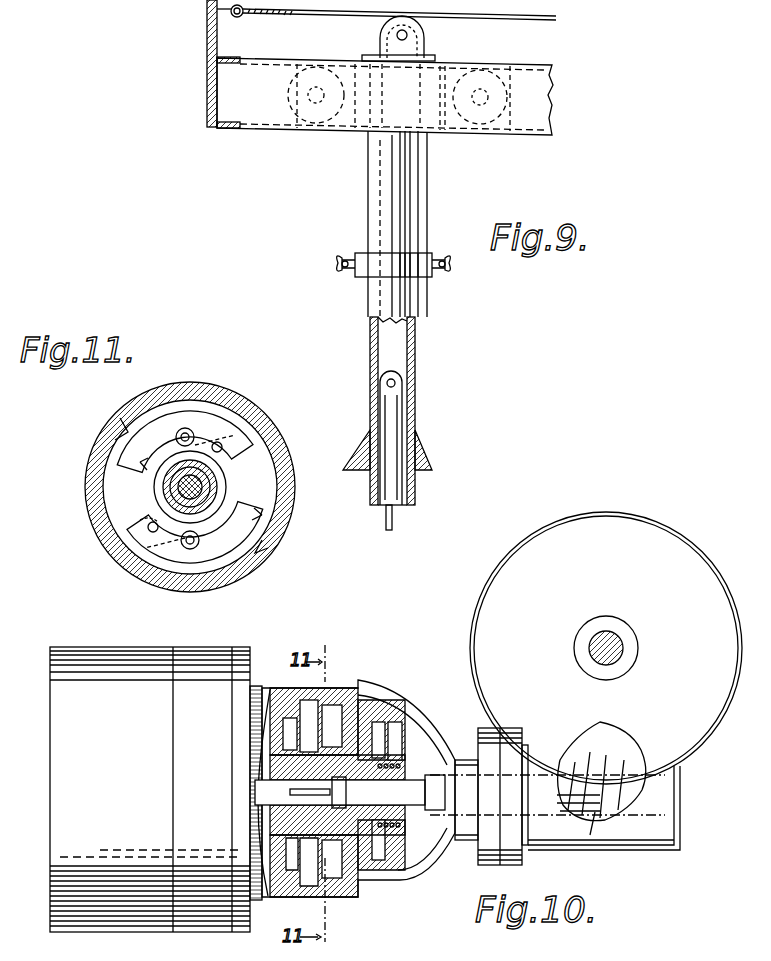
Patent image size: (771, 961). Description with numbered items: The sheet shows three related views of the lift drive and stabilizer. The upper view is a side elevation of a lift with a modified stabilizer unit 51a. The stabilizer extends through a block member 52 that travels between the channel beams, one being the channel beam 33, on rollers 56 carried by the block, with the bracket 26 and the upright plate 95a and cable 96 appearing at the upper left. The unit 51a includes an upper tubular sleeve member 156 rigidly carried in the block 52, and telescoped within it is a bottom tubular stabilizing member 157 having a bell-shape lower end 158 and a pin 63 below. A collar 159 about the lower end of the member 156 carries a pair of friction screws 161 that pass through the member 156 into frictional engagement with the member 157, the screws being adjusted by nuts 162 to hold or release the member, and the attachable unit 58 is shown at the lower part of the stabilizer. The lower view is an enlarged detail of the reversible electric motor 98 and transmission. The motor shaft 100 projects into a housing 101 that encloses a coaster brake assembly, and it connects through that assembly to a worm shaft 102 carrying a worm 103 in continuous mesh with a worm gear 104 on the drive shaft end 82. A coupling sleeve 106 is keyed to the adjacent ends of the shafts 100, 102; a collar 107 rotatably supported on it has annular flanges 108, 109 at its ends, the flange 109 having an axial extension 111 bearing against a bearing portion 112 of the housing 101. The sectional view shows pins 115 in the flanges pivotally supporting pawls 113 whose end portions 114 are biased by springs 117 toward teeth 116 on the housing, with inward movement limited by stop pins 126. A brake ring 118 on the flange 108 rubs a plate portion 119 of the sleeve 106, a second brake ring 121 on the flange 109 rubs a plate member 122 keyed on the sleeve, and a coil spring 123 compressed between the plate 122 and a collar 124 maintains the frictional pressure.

In FIG. 9, the channel bracket 26 is at (210, 103).
In FIG. 9, the channel beam 33 is at (515, 63).
In FIG. 9, the stabilizer unit 51a is at (430, 198).
In FIG. 9, the block member 52 is at (455, 72).
In FIG. 9, the roller 56 is at (320, 62).
In FIG. 9, the attachable unit 58 is at (405, 400).
In FIG. 9, the pin 63 is at (395, 517).
In FIG. 10, the drive shaft end 82 is at (630, 650).
In FIG. 9, the upright plate 95a is at (207, 30).
In FIG. 9, the cable 96 is at (552, 20).
In FIG. 10, the electric motor 98 is at (208, 655).
In FIG. 11, the motor shaft 100 is at (204, 483).
In FIG. 10, the motor shaft 100 is at (300, 798).
In FIG. 11, the housing 101 is at (265, 432).
In FIG. 10, the housing 101 is at (385, 752).
In FIG. 10, the worm shaft 102 is at (350, 792).
In FIG. 10, the worm 103 is at (590, 838).
In FIG. 10, the worm gear 104 is at (625, 745).
In FIG. 11, the coupling sleeve 106 is at (211, 487).
In FIG. 10, the coupling sleeve 106 is at (547, 784).
In FIG. 11, the collar 107 is at (215, 488).
In FIG. 10, the collar 107 is at (300, 815).
In FIG. 10, the annular flange 108 is at (267, 793).
In FIG. 11, the annular flange 109 is at (235, 458).
In FIG. 10, the annular flange 109 is at (345, 720).
In FIG. 10, the annular axial extension 111 is at (375, 735).
In FIG. 10, the bearing portion 112 is at (372, 880).
In FIG. 11, the pawl 113 is at (120, 432).
In FIG. 10, the pawl 113 is at (342, 880).
In FIG. 11, the pawl end portion 114 is at (140, 548).
In FIG. 11, the pin 115 is at (183, 430).
In FIG. 10, the pin 115 is at (322, 872).
In FIG. 11, the tooth 116 is at (222, 445).
In FIG. 11, the spring 117 is at (190, 437).
In FIG. 10, the brake ring 118 is at (300, 742).
In FIG. 10, the plate portion 119 is at (292, 750).
In FIG. 10, the second brake ring 121 is at (365, 735).
In FIG. 10, the plate member 122 is at (395, 745).
In FIG. 10, the coil spring 123 is at (398, 770).
In FIG. 10, the collar 124 is at (392, 822).
In FIG. 11, the stop pin 126 is at (150, 530).
In FIG. 9, the upper tubular sleeve member 156 is at (368, 150).
In FIG. 9, the bottom tubular stabilizing member 157 is at (418, 322).
In FIG. 9, the bell-shape lower end 158 is at (425, 448).
In FIG. 9, the collar 159 is at (358, 258).
In FIG. 9, the friction screw 161 is at (440, 258).
In FIG. 9, the nut 162 is at (448, 266).